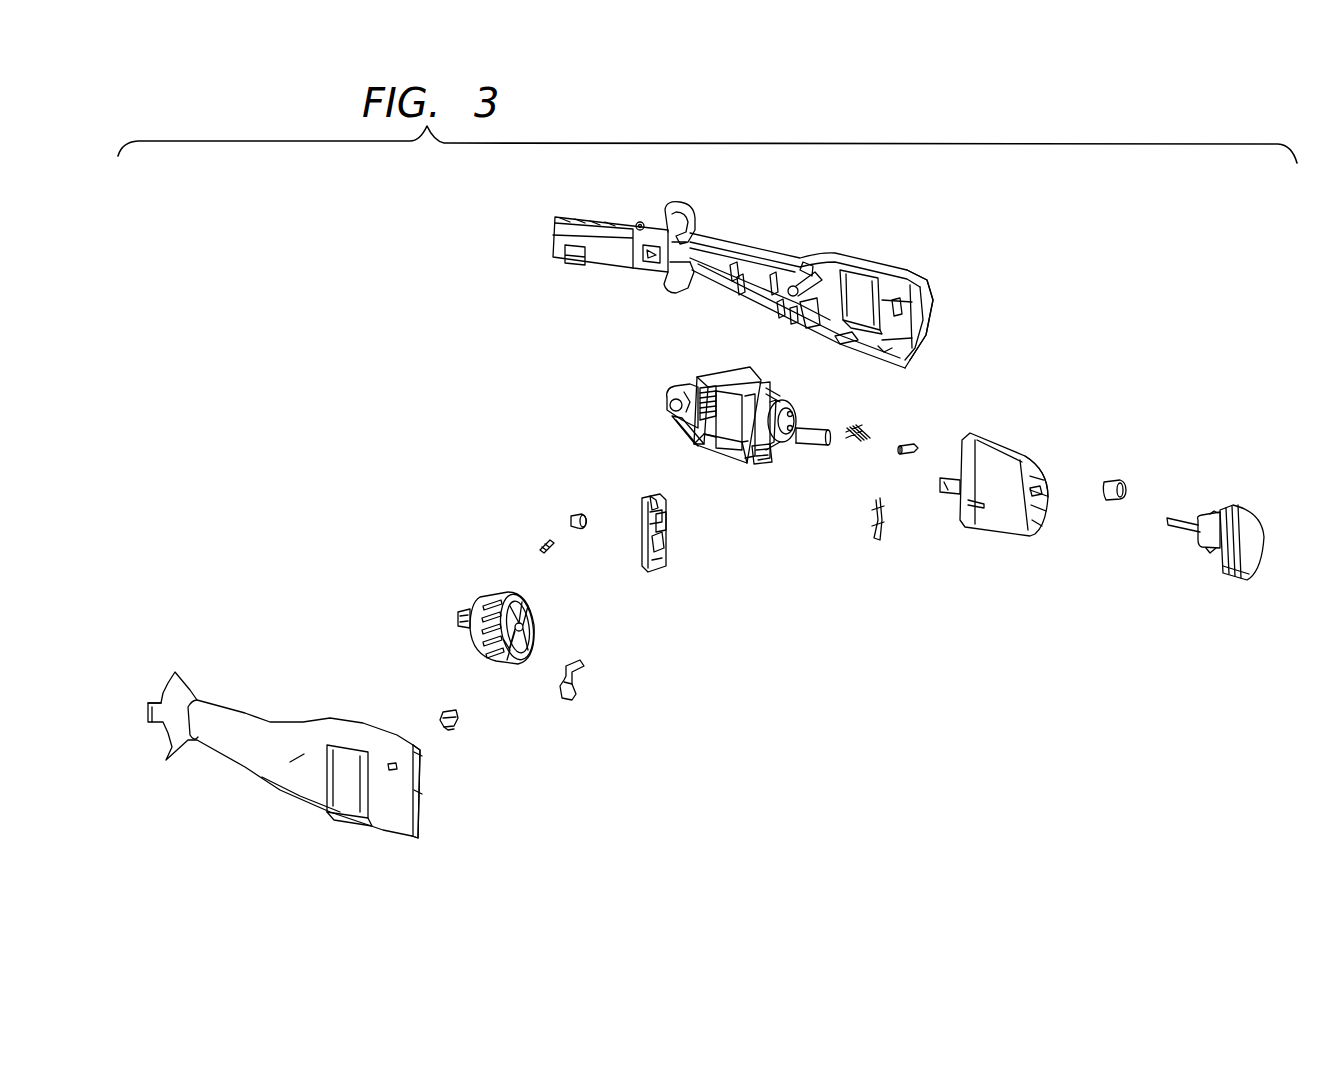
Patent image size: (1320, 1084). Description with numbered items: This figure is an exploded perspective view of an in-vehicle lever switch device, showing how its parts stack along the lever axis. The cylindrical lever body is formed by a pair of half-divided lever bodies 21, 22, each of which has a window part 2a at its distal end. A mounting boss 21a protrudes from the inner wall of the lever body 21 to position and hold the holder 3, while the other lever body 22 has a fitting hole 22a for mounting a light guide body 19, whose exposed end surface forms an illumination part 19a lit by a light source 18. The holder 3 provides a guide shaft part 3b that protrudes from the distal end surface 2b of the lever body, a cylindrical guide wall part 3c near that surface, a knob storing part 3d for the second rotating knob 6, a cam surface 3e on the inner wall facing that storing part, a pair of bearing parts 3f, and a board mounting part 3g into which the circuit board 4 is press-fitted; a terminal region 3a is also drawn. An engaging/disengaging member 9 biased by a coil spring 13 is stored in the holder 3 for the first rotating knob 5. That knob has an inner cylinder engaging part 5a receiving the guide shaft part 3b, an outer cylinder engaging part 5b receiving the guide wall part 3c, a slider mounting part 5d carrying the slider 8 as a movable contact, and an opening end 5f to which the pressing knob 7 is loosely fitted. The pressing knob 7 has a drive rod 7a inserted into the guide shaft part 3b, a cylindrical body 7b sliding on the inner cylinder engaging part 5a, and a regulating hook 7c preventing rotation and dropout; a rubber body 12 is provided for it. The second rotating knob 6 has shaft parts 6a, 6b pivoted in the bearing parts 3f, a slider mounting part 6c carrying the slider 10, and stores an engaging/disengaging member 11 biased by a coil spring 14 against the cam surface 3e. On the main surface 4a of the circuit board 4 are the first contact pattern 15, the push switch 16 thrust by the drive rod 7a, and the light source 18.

The lever body 21 is at (728, 245).
The mounting boss 21a is at (803, 262).
The window part 2a is at (846, 282).
The distal end surface 2b is at (922, 280).
The holder 3 is at (726, 376).
The motor terminal 3a is at (672, 410).
The guide shaft part 3b is at (812, 440).
The guide wall part 3c is at (772, 438).
The knob storing part 3d is at (724, 442).
The cam surface 3e is at (698, 394).
The bearing parts 3f is at (692, 430).
The board mounting part 3g is at (760, 466).
The coil spring 13 is at (850, 420).
The engaging/disengaging member 9 is at (908, 438).
The slider 8 is at (868, 522).
The first rotating knob 5 is at (1010, 548).
The inner cylinder engaging part 5a is at (1030, 460).
The outer cylinder engaging part 5b is at (966, 512).
The slider mounting part 5d is at (948, 490).
The opening end 5f is at (1040, 514).
The rubber body 12 is at (1114, 480).
The pressing knob 7 is at (1257, 557).
The drive rod 7a is at (1173, 527).
The cylindrical body 7b is at (1193, 550).
The regulating hook 7c is at (1212, 510).
The second rotating knob 6 is at (484, 590).
The shaft part 6a is at (456, 614).
The shaft part 6b is at (536, 628).
The slider mounting part 6c is at (508, 658).
The coil spring 14 is at (540, 542).
The engaging/disengaging member 11 is at (572, 513).
The circuit board 4 is at (660, 572).
The main surface 4a is at (642, 524).
The first contact pattern 15 is at (648, 541).
The push switch 16 is at (668, 520).
The light source 18 is at (644, 498).
The slider 10 is at (570, 700).
The light guide body 19 is at (447, 710).
The illumination part 19a is at (452, 726).
The lever body 22 is at (250, 767).
The fitting hole 22a is at (392, 762).